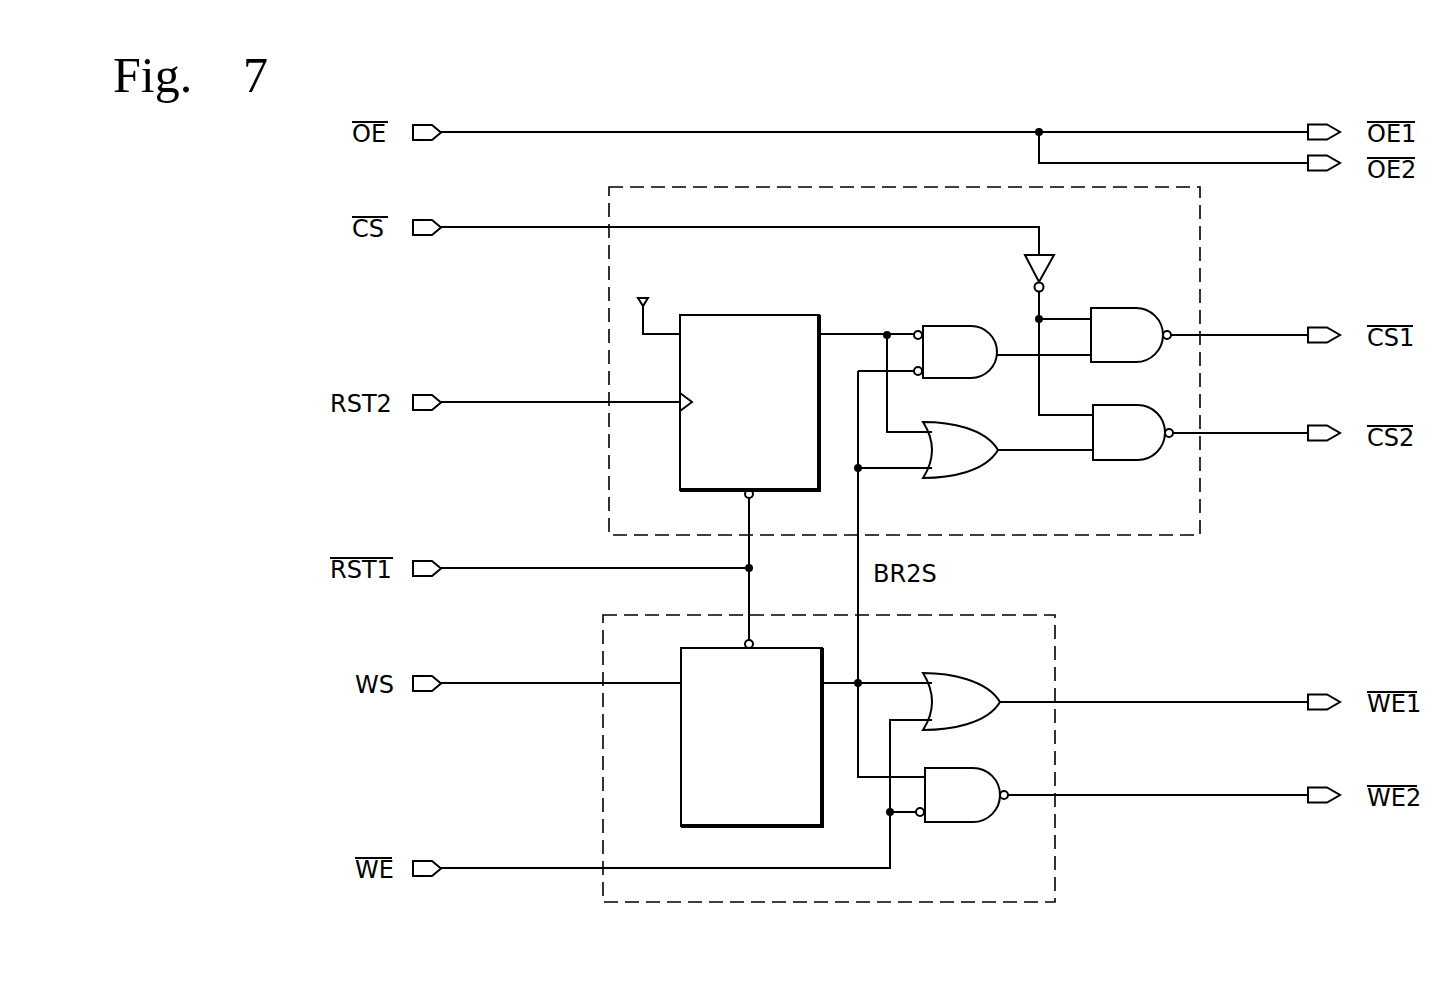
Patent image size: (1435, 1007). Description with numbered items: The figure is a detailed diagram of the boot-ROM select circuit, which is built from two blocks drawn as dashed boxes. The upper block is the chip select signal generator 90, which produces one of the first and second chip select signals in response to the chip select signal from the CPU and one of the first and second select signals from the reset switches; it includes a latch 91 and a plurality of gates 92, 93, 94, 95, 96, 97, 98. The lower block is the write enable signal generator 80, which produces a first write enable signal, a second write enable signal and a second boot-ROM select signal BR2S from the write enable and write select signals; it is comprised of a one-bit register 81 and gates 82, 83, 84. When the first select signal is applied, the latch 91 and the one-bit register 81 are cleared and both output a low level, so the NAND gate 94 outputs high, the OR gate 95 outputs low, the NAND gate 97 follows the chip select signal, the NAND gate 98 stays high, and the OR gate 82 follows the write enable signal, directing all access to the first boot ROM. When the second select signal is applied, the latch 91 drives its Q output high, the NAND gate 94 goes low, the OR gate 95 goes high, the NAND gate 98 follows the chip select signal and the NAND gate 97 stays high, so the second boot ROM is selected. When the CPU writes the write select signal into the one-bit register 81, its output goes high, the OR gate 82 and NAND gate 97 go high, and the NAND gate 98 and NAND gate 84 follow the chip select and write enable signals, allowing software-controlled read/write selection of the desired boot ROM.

The write enable signal generator 80 is at (1055, 640).
The one-bit register 81 is at (681, 770).
The OR gate 82 is at (960, 673).
The gate 83 is at (920, 816).
The NAND gate 84 is at (962, 822).
The chip select signal generator 90 is at (1200, 268).
The latch 91 is at (730, 316).
The gate 92 is at (918, 331).
The gate 93 is at (918, 378).
The NAND gate 94 is at (975, 326).
The OR gate 95 is at (945, 479).
The gate 96 is at (1045, 253).
The NAND gate 97 is at (1125, 308).
The NAND gate 98 is at (1125, 461).